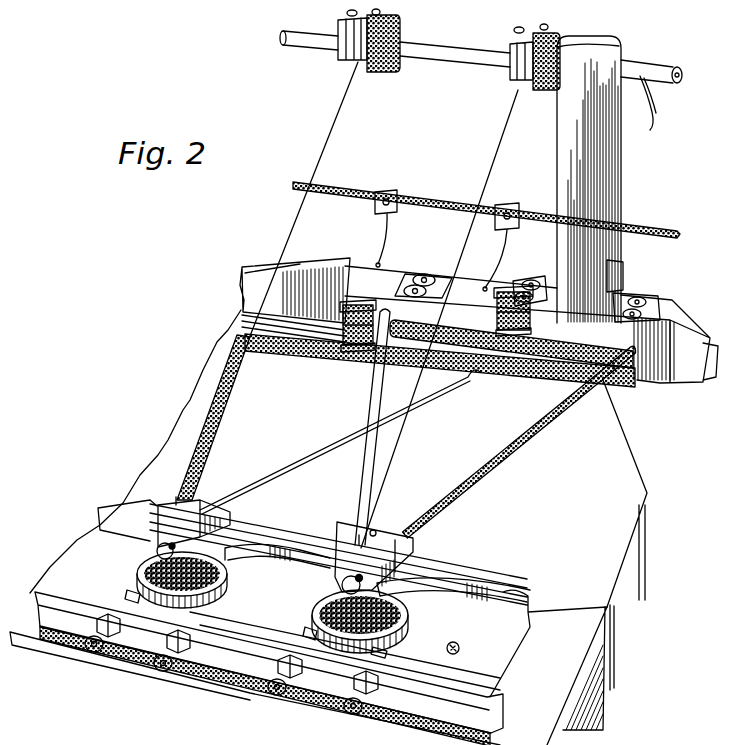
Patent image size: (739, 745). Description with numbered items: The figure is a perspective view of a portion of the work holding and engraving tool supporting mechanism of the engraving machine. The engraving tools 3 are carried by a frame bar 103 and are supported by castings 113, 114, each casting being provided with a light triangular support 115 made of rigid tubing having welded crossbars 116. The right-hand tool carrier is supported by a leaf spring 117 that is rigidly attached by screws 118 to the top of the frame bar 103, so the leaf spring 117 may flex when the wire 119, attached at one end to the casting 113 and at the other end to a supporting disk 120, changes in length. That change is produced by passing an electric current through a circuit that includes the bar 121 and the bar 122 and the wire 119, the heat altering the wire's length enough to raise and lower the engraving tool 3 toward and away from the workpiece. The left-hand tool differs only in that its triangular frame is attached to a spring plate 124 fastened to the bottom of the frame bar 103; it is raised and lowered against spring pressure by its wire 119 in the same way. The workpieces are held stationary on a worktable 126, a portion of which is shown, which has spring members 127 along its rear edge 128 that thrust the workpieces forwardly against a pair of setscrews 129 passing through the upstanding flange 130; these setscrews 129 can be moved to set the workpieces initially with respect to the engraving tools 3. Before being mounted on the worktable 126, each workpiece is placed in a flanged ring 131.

The engraving tool 3 is at (178, 497).
The frame bar 103 is at (697, 323).
The casting 113 is at (338, 528).
The casting 114 is at (217, 503).
The triangular support 115 is at (323, 450).
The crossbar 116 is at (300, 368).
The leaf spring 117 is at (572, 410).
The screw 118 is at (424, 274).
The wire 119 is at (347, 123).
The supporting disk 120 is at (338, 48).
The bar 121 is at (645, 230).
The bar 122 is at (665, 64).
The spring plate 124 is at (240, 332).
The worktable 126 is at (503, 678).
The spring member 127 is at (252, 552).
The rear edge 128 is at (536, 622).
The setscrew 129 is at (137, 592).
The upstanding flange 130 is at (253, 672).
The flanged ring 131 is at (157, 553).